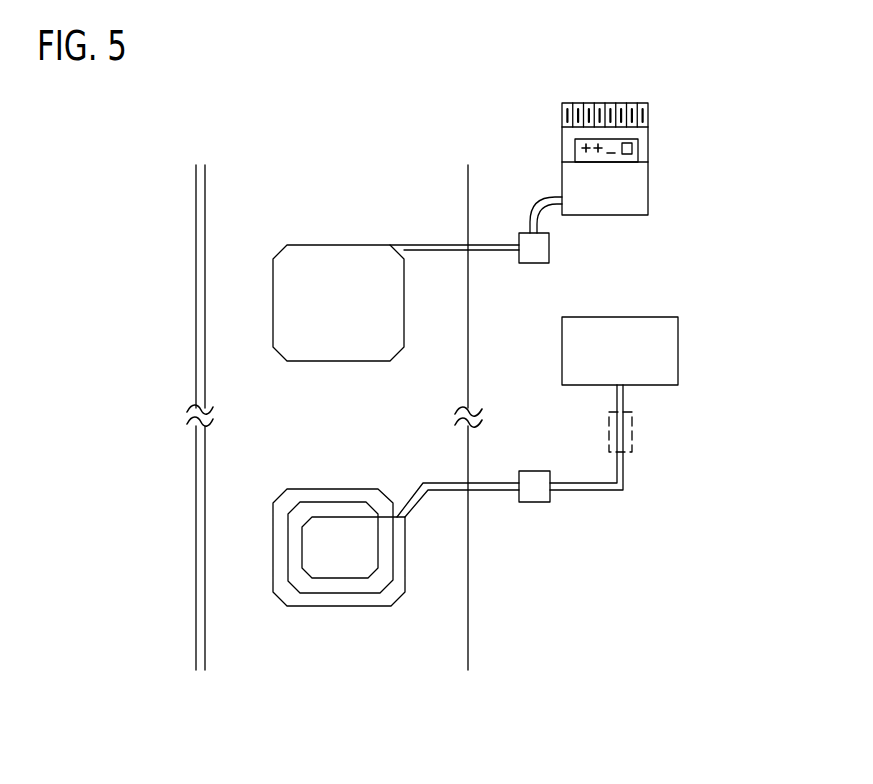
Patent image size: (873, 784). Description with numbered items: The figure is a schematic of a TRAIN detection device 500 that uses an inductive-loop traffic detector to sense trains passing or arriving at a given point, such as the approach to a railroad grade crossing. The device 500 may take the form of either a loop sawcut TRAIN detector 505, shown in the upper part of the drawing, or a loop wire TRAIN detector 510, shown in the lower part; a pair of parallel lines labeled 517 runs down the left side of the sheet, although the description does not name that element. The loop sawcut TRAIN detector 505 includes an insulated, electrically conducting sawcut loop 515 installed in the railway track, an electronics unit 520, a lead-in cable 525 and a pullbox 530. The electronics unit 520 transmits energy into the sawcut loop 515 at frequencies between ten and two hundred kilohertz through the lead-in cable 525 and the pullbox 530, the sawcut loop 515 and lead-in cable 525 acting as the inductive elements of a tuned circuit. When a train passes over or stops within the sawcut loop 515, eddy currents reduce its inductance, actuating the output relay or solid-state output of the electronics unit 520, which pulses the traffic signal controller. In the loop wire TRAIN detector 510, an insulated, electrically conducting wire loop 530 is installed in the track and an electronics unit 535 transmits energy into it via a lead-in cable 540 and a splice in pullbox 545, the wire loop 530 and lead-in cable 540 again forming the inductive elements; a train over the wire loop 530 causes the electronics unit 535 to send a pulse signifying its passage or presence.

The TRAIN detection device 500 is at (728, 67).
The loop sawcut TRAIN detector 505 is at (333, 155).
The loop wire TRAIN detector 510 is at (335, 683).
The sawcut loop 515 is at (338, 245).
The pipe 517 is at (263, 417).
The electronics unit 520 is at (650, 177).
The lead-in cable 525 is at (540, 197).
The pullbox / wire loop 530 is at (550, 248).
The electronics unit 535 is at (680, 350).
The lead-in cable 540 is at (625, 468).
The splice in pullbox 545 is at (533, 502).